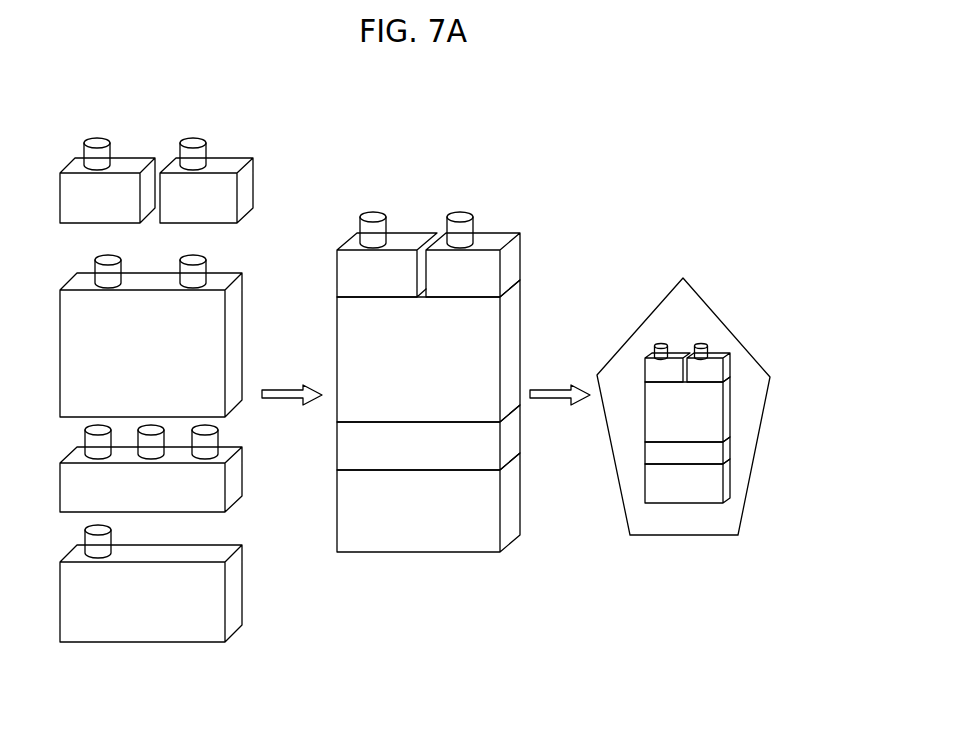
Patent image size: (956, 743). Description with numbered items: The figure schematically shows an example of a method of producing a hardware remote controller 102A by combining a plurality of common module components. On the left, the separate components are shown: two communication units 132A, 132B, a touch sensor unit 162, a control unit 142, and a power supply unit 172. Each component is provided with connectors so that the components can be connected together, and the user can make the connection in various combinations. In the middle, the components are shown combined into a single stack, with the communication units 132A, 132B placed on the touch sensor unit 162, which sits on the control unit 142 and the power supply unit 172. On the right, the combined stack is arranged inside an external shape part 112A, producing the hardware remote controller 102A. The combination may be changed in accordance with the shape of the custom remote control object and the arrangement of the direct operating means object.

The communication unit 132A is at (128, 162).
The communication unit 132B is at (228, 162).
The touch sensor unit 162 is at (240, 343).
The control unit 142 is at (247, 475).
The power supply unit 172 is at (243, 588).
The hardware remote controller 102A is at (716, 371).
The external shape part 112A is at (752, 352).